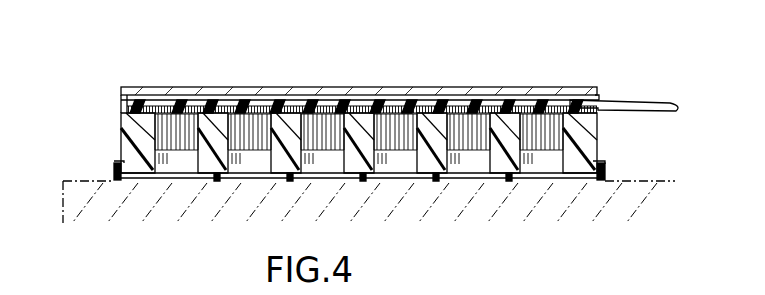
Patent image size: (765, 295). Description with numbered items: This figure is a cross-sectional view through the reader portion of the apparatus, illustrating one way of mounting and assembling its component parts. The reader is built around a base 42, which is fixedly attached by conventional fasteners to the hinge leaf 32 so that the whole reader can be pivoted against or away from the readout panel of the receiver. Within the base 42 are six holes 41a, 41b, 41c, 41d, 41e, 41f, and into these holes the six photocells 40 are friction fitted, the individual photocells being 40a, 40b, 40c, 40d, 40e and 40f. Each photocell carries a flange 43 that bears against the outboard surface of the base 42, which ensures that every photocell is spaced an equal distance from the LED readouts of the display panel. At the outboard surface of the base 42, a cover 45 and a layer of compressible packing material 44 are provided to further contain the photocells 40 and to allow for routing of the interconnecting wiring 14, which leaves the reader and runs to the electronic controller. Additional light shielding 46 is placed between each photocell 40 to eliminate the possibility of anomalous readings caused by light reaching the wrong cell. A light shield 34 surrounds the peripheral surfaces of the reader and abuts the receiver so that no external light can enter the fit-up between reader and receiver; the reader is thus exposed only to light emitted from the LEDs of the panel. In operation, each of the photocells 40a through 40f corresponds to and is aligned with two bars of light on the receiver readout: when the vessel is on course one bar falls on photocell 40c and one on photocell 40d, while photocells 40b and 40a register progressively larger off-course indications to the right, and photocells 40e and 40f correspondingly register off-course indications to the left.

The interconnecting wiring 14 is at (647, 112).
The leaf 32 is at (121, 90).
The light shield 34 is at (116, 165).
The photocells 40 is at (172, 118).
The photocell 40a is at (182, 120).
The photocell 40b is at (257, 118).
The photocell 40c is at (330, 118).
The photocell 40d is at (403, 116).
The photocell 40e is at (472, 118).
The photocell 40f is at (547, 118).
The hole 41a is at (168, 160).
The hole 41b is at (243, 160).
The hole 41c is at (315, 162).
The hole 41d is at (390, 162).
The hole 41e is at (465, 162).
The hole 41f is at (537, 162).
The base 42 is at (590, 150).
The flange 43 is at (152, 115).
The compressible packing material 44 is at (142, 108).
The cover 45 is at (121, 106).
The light shielding 46 is at (509, 181).